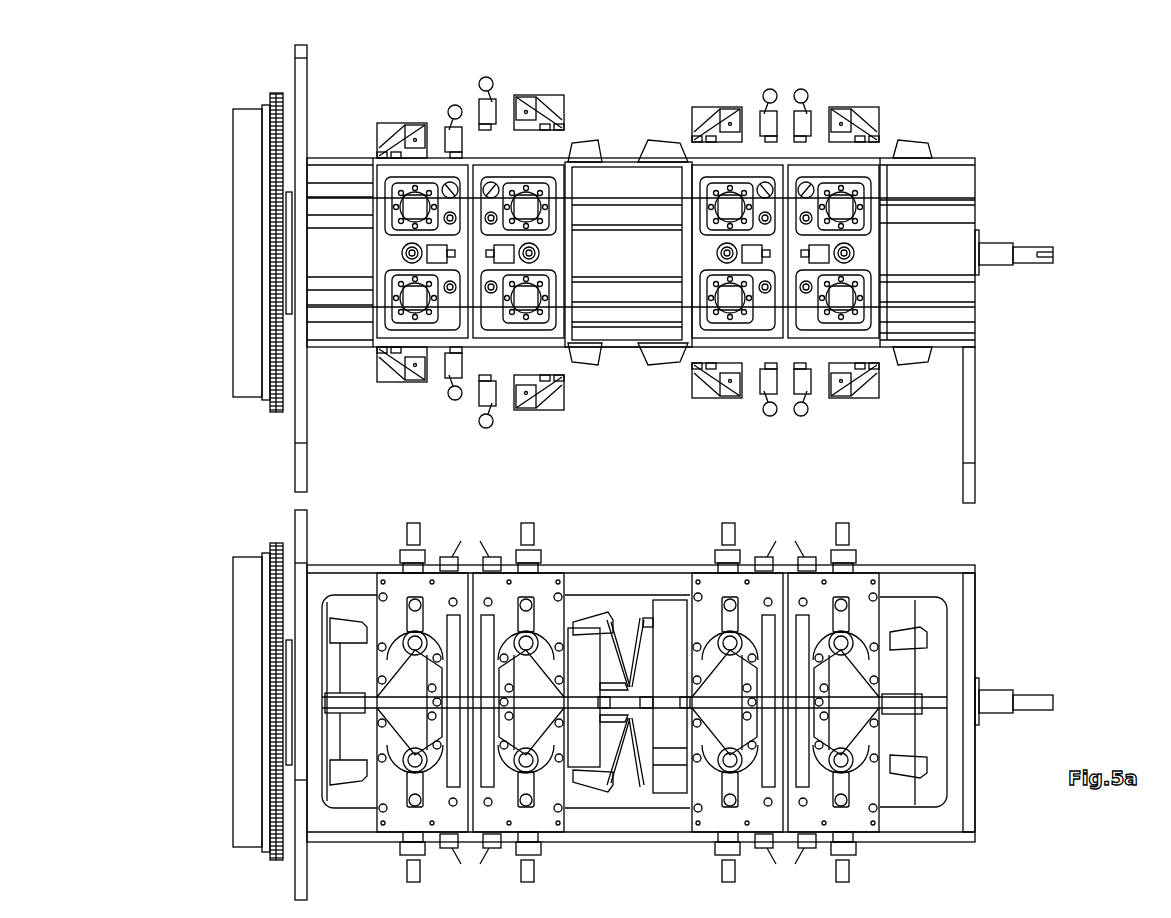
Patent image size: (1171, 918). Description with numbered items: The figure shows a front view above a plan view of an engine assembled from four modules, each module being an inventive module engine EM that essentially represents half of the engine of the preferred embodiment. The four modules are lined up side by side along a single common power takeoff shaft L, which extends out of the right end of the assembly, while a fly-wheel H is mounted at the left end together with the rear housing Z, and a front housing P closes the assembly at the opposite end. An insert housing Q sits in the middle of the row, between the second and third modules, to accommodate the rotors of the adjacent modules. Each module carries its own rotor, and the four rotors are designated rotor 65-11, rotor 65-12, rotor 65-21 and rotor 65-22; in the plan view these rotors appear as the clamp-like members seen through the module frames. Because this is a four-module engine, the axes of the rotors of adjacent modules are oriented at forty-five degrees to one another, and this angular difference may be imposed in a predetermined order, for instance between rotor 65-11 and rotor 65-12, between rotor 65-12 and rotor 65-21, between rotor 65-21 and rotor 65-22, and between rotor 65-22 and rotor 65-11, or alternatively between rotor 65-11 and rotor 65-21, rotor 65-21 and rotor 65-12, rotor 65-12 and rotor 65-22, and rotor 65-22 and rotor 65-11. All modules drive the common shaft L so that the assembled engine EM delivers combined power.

The fly-wheel H is at (440, 462).
The module engine EM is at (833, 165).
The power takeoff shaft L is at (1050, 421).
The front housing P is at (1045, 429).
The insert housing Q is at (628, 282).
The rear housing Z is at (261, 472).
The rotor 65-11 is at (378, 641).
The rotor 65-12 is at (587, 641).
The rotor 65-21 is at (677, 634).
The rotor 65-22 is at (876, 641).